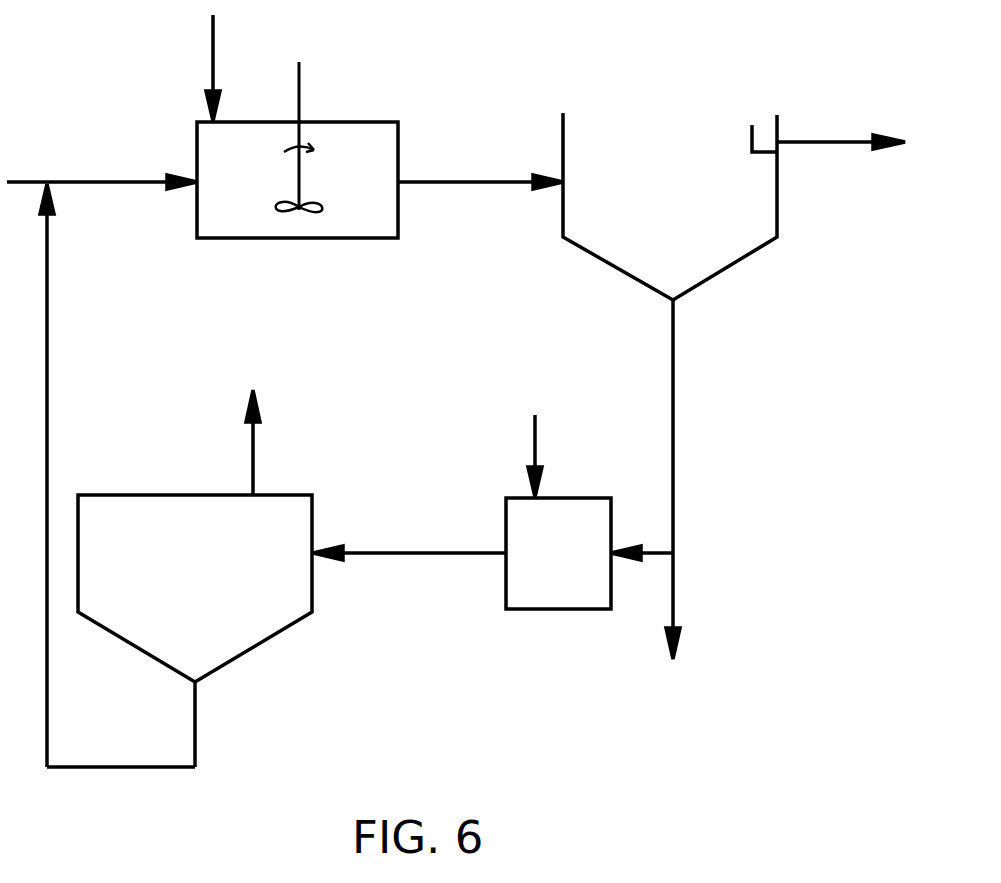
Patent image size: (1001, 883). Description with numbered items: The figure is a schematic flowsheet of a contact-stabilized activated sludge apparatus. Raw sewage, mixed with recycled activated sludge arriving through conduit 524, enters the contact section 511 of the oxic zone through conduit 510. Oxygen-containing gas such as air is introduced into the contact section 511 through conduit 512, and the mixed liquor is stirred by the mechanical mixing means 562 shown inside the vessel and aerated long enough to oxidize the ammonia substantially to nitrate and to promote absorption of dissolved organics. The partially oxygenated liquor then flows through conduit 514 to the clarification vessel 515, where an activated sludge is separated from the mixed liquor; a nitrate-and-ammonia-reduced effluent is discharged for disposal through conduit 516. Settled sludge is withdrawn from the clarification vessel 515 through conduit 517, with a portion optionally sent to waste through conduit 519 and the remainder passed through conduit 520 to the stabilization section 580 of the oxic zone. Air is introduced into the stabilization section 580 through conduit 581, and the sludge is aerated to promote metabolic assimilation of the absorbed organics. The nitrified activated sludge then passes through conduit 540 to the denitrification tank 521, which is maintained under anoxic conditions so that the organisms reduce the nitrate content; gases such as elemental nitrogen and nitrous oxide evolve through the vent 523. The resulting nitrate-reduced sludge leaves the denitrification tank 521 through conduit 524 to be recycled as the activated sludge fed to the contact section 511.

The conduit 510 is at (30, 181).
The contact section 511 is at (318, 121).
The conduit 512 is at (211, 67).
The conduit 514 is at (445, 184).
The clarification vessel 515 is at (737, 263).
The conduit 516 is at (809, 144).
The conduit 517 is at (675, 450).
The conduit 519 is at (675, 603).
The conduit 520 is at (652, 548).
The denitrification tank 521 is at (255, 645).
The vent 523 is at (255, 441).
The conduit 524 is at (48, 374).
The conduit 540 is at (405, 555).
The agitator impeller 562 is at (320, 210).
The stabilization section 580 is at (545, 611).
The conduit 581 is at (537, 442).